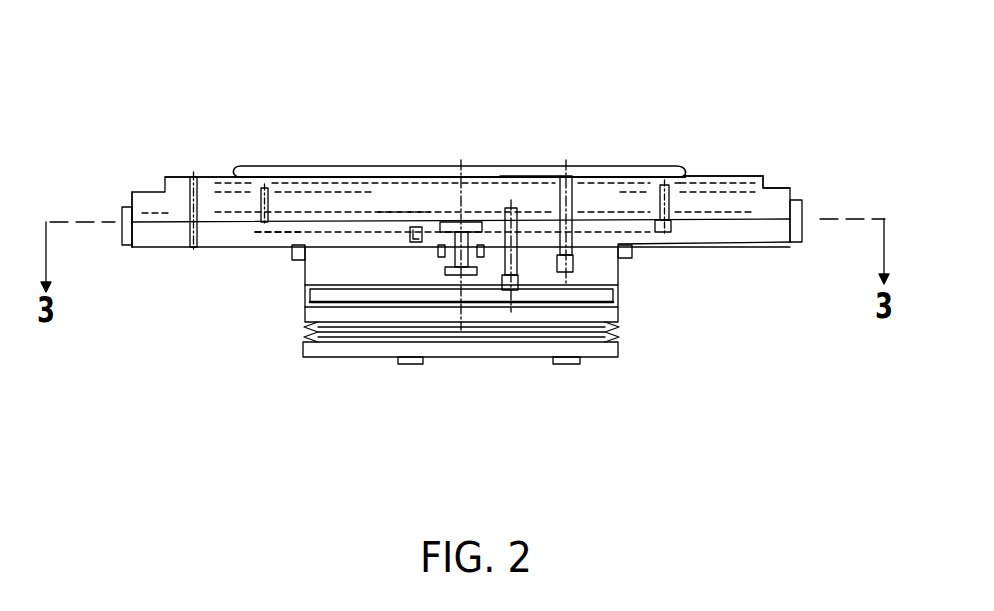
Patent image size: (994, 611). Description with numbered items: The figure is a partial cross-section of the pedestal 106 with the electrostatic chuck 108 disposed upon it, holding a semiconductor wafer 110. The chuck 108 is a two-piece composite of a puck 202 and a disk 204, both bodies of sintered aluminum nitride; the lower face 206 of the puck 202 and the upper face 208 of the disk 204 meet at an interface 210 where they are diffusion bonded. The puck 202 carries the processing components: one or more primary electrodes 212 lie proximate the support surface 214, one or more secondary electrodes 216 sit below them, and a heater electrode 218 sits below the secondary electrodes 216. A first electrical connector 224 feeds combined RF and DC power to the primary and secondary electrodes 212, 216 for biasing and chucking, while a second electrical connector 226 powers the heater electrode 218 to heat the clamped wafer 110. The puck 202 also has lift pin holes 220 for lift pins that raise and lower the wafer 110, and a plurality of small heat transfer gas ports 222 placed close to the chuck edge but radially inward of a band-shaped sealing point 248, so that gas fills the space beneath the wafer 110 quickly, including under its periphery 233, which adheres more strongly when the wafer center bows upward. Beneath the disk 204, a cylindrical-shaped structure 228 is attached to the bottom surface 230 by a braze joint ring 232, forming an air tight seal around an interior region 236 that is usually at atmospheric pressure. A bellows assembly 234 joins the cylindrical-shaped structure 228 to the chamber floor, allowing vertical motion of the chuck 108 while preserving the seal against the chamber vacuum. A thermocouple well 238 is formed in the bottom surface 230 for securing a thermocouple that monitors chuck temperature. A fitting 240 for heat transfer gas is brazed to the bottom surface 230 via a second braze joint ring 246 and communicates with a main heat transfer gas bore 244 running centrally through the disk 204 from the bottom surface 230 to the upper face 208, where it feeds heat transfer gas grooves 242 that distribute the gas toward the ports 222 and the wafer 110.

The pedestal 106 is at (660, 301).
The electrostatic chuck 108 is at (822, 142).
The semiconductor wafer 110 is at (432, 168).
The puck 202 is at (800, 193).
The disk 204 is at (782, 242).
The lower face 206 is at (330, 221).
The upper face 208 is at (232, 224).
The interface 210 is at (173, 221).
The primary electrodes 212 is at (600, 183).
The support surface 214 is at (533, 175).
The secondary electrodes 216 is at (287, 192).
The heater electrode 218 is at (403, 212).
The lift pin holes 220 is at (190, 177).
The heat transfer gas ports 222 is at (262, 191).
The first electrical connector 224 is at (574, 262).
The second electrical connector 226 is at (518, 277).
The cylindrical-shaped structure 228 is at (288, 228).
The bottom surface 230 is at (158, 248).
The braze joint ring 232 is at (292, 258).
The periphery 233 is at (680, 174).
The bellows assembly 234 is at (303, 358).
The interior region 236 is at (422, 272).
The thermocouple well 238 is at (413, 242).
The fitting 240 is at (458, 283).
The heat transfer gas grooves 242 is at (305, 294).
The main heat transfer gas bore 244 is at (460, 221).
The second braze joint ring 246 is at (484, 252).
The sealing point 248 is at (227, 176).